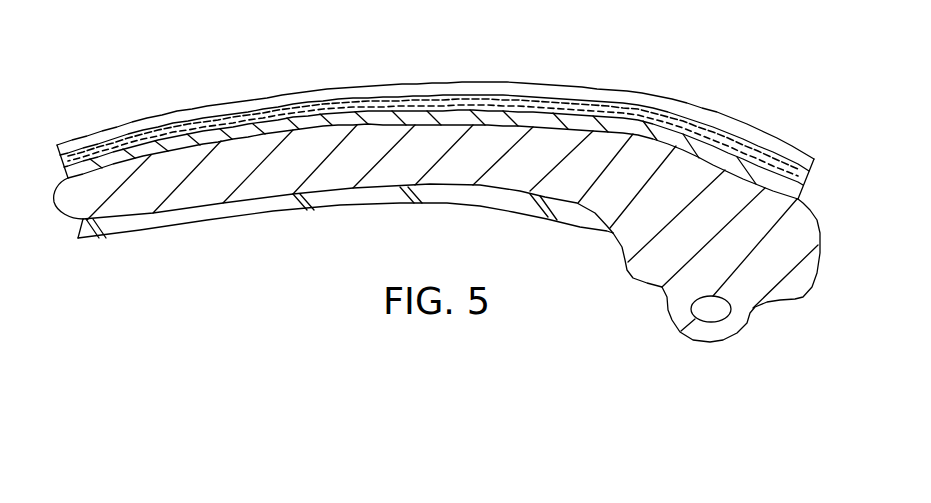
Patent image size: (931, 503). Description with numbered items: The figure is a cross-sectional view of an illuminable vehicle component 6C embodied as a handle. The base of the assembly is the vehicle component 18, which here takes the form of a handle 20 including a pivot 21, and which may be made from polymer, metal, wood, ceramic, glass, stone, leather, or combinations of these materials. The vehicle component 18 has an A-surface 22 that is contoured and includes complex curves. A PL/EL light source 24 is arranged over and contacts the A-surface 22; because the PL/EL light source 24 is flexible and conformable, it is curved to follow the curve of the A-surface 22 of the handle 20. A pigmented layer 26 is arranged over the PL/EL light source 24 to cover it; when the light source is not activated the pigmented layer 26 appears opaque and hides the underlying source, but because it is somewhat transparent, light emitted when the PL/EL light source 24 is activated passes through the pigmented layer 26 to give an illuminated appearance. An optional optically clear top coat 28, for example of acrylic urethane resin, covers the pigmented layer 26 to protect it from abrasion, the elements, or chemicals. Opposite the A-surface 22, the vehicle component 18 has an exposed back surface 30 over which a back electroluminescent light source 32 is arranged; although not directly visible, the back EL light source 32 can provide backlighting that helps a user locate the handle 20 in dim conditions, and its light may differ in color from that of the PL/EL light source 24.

The illuminable vehicle component 6C is at (230, 63).
The A-surface 22 is at (485, 108).
The PL/EL light source 24 is at (675, 140).
The pigmented layer 26 is at (742, 140).
The clear top coat 28 is at (813, 163).
The back surface 30 is at (345, 227).
The back electroluminescent light source 32 is at (335, 204).
The vehicle component 18 is at (696, 262).
The handle 20 is at (696, 262).
The pivot 21 is at (712, 322).